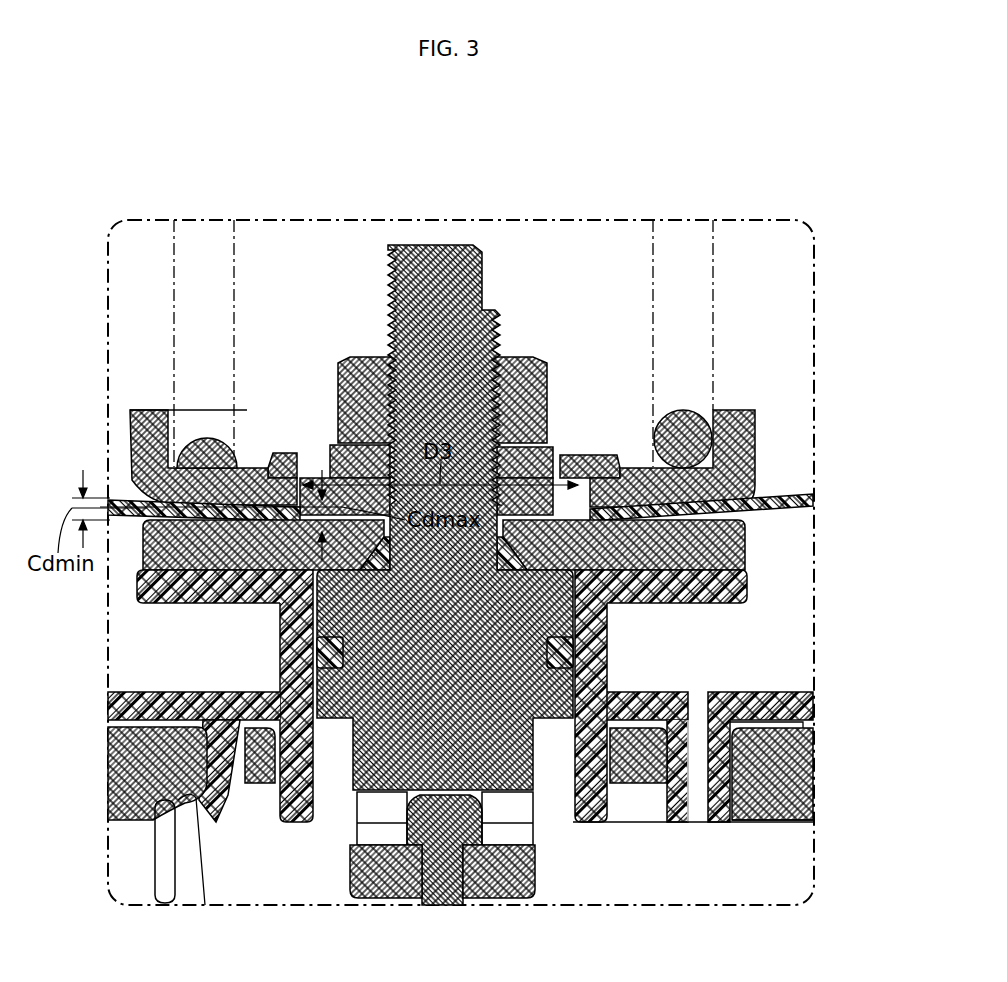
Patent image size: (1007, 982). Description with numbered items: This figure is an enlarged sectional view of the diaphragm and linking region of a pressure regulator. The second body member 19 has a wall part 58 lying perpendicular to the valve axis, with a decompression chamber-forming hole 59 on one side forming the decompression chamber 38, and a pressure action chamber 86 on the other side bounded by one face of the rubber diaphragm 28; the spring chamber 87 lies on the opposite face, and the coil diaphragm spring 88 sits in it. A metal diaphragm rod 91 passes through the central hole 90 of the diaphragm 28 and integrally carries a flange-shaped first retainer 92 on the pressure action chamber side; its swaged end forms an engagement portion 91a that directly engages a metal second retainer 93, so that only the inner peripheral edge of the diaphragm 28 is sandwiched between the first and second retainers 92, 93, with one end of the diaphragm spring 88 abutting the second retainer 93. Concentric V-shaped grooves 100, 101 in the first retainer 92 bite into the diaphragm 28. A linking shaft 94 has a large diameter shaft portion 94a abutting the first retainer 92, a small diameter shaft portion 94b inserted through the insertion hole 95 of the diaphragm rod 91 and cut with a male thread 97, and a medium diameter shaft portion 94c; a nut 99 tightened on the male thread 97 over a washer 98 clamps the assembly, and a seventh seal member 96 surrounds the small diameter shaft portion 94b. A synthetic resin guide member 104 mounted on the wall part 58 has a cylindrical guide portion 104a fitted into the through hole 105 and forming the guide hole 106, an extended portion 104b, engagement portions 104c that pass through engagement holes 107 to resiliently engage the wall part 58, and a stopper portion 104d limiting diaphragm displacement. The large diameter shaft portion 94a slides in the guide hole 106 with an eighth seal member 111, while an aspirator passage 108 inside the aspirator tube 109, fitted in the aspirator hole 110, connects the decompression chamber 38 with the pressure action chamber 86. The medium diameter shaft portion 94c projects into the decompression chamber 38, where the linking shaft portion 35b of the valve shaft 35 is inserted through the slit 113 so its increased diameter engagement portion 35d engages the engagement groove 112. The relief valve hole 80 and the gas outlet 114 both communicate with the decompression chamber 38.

The second body member 19 is at (818, 760).
The diaphragm 28 is at (782, 502).
The valve shaft 35 is at (497, 882).
The linking shaft portion 35b is at (435, 892).
The increased diameter engagement portion 35d is at (487, 820).
The decompression chamber 38 is at (256, 874).
The wall part 58 is at (758, 747).
The decompression chamber-forming hole 59 is at (162, 805).
The relief valve hole 80 is at (133, 820).
The pressure action chamber 86 is at (793, 568).
The spring chamber 87 is at (591, 335).
The diaphragm spring 88 is at (680, 432).
The central hole 90 is at (548, 555).
The diaphragm rod 91 is at (347, 473).
The engagement portion 91a is at (290, 457).
The first retainer 92 is at (162, 553).
The second retainer 93 is at (208, 470).
The linking shaft 94 is at (489, 559).
The large diameter shaft portion 94a is at (550, 700).
The small diameter shaft portion 94b is at (445, 480).
The medium diameter shaft portion 94c is at (540, 876).
The insertion hole 95 is at (490, 520).
The seventh seal member 96 is at (378, 560).
The male thread 97 is at (445, 517).
The washer 98 is at (543, 455).
The nut 99 is at (545, 383).
The grooves 100 is at (195, 518).
The grooves 101 is at (615, 503).
The guide member 104 is at (784, 683).
The guide portion 104a is at (597, 818).
The extended portion 104b is at (157, 710).
The engagement portions 104c is at (200, 803).
The stopper portion 104d is at (740, 597).
The through hole 105 is at (272, 765).
The guide hole 106 is at (583, 787).
The engagement holes 107 is at (218, 740).
The aspirator passage 108 is at (700, 710).
The aspirator tube 109 is at (725, 825).
The aspirator hole 110 is at (716, 775).
The eighth seal member 111 is at (563, 657).
The engagement groove 112 is at (375, 832).
The slit 113 is at (468, 877).
The gas outlet 114 is at (782, 822).